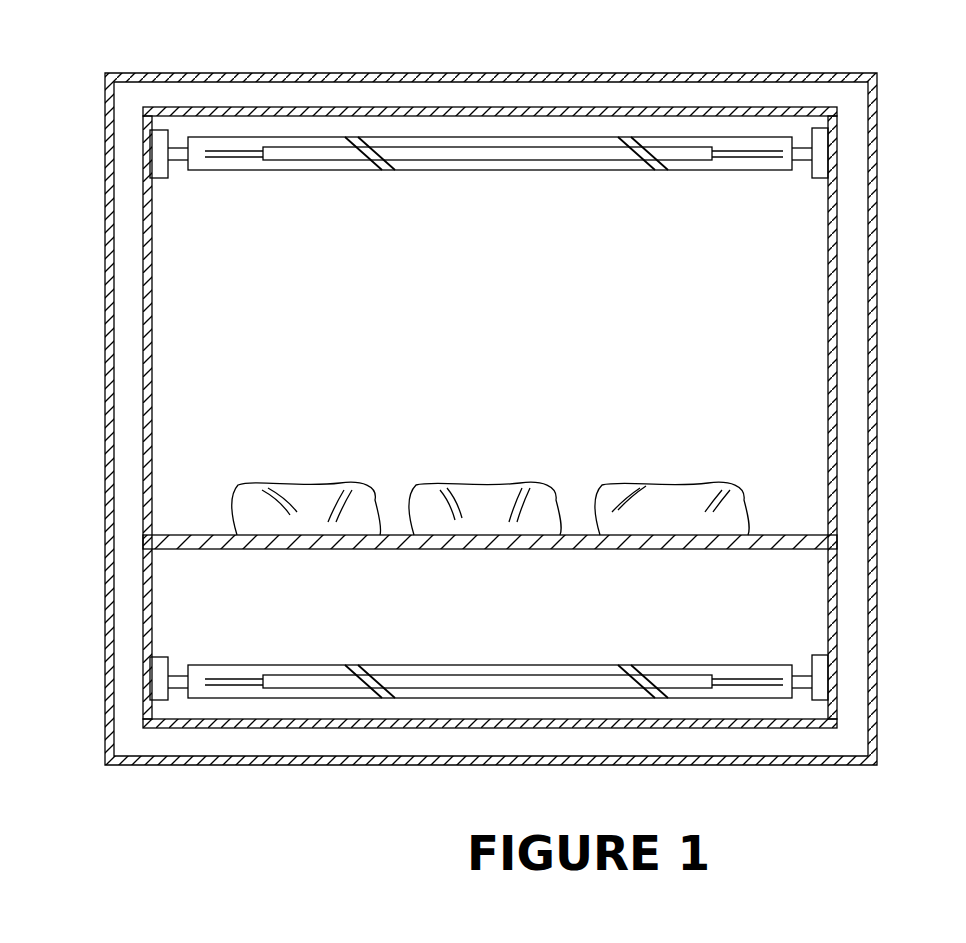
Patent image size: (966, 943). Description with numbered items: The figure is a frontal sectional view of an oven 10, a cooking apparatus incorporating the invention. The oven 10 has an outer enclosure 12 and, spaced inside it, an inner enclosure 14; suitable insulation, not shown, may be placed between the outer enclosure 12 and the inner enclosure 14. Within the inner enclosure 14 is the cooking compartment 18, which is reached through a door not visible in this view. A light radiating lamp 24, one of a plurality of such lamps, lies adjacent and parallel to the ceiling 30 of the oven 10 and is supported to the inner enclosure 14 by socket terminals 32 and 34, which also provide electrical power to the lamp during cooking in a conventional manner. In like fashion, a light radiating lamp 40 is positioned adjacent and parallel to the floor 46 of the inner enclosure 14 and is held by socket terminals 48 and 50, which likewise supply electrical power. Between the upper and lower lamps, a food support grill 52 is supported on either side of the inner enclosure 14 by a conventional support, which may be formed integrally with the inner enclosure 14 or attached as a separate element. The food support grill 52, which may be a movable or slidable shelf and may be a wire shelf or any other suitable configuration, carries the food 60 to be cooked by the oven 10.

The oven 10 is at (898, 302).
The outer enclosure 12 is at (877, 432).
The inner enclosure 14 is at (490, 414).
The cooking compartment 18 is at (379, 305).
The light radiating lamp 24 is at (465, 172).
The ceiling 30 is at (635, 107).
The socket terminal 32 is at (163, 178).
The socket terminal 34 is at (818, 178).
The light radiating lamp 40 is at (470, 666).
The floor 46 is at (558, 730).
The socket terminal 48 is at (165, 657).
The socket terminal 50 is at (821, 655).
The food support grill 52 is at (832, 536).
The food 60 is at (453, 517).